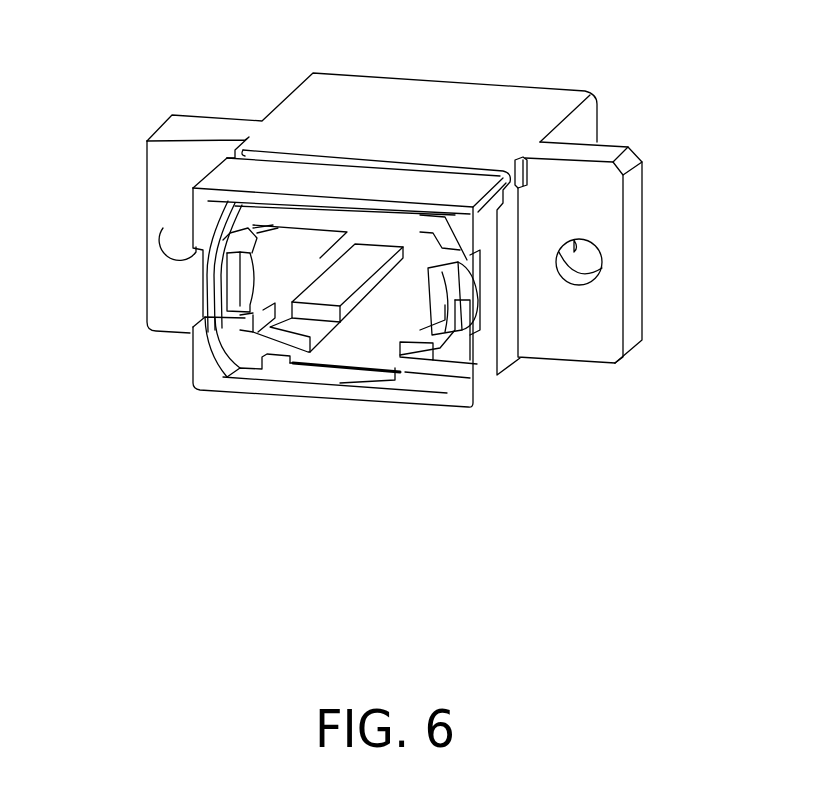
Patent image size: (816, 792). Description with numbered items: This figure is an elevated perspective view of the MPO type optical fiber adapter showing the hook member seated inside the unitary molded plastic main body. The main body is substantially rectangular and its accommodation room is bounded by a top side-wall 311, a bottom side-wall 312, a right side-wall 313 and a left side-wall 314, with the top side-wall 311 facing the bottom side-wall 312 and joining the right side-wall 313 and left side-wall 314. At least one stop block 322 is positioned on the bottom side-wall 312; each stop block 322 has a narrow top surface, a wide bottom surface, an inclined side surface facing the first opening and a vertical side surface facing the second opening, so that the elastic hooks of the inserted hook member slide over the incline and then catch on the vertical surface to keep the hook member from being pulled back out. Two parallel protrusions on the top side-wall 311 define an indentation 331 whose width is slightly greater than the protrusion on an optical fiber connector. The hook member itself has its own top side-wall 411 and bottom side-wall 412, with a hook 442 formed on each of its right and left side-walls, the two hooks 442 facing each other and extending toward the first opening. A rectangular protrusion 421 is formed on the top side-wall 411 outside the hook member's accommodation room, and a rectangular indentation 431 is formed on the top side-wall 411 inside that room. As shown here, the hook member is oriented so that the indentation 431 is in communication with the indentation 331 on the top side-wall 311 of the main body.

The top side-wall 311 is at (323, 397).
The bottom side-wall 312 is at (458, 187).
The right side-wall 313 is at (202, 363).
The left side-wall 314 is at (483, 373).
The stop block 322 is at (357, 262).
The indentation 331 is at (410, 293).
The top side-wall 411 is at (428, 353).
The bottom side-wall 412 is at (275, 218).
The rectangular protrusion 421 is at (315, 360).
The rectangular indentation 431 is at (357, 340).
The hook 442 is at (227, 275).